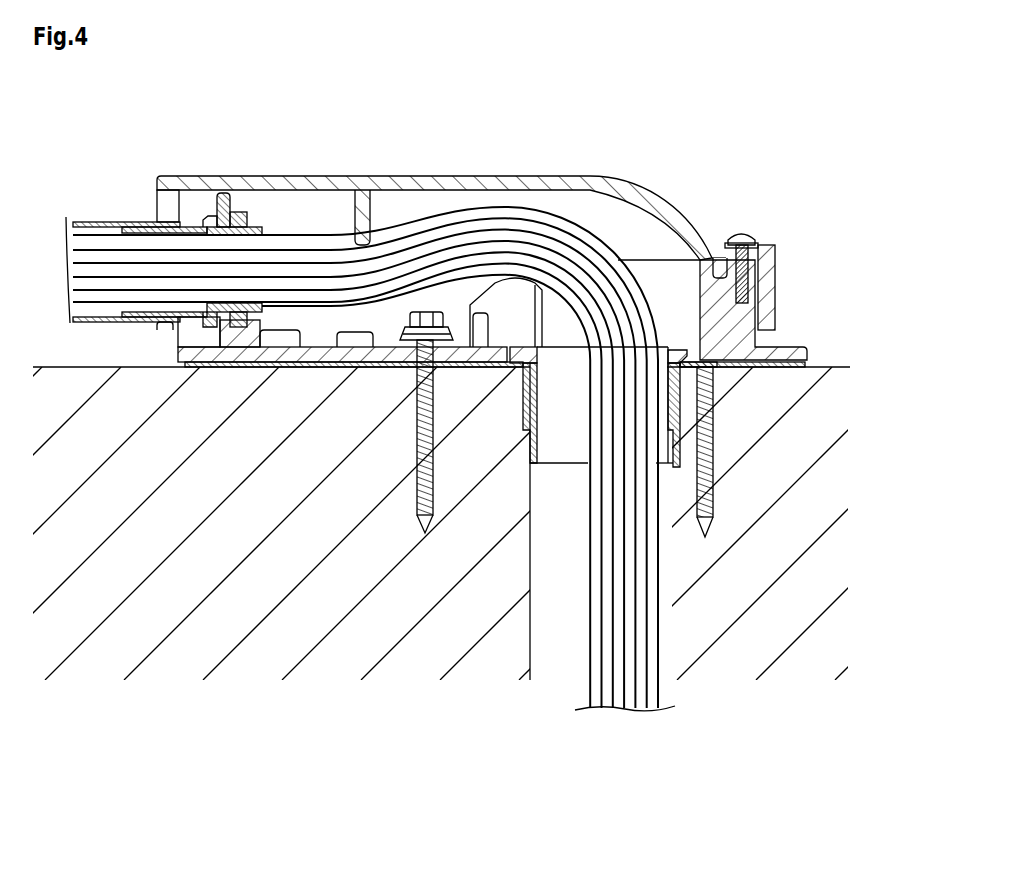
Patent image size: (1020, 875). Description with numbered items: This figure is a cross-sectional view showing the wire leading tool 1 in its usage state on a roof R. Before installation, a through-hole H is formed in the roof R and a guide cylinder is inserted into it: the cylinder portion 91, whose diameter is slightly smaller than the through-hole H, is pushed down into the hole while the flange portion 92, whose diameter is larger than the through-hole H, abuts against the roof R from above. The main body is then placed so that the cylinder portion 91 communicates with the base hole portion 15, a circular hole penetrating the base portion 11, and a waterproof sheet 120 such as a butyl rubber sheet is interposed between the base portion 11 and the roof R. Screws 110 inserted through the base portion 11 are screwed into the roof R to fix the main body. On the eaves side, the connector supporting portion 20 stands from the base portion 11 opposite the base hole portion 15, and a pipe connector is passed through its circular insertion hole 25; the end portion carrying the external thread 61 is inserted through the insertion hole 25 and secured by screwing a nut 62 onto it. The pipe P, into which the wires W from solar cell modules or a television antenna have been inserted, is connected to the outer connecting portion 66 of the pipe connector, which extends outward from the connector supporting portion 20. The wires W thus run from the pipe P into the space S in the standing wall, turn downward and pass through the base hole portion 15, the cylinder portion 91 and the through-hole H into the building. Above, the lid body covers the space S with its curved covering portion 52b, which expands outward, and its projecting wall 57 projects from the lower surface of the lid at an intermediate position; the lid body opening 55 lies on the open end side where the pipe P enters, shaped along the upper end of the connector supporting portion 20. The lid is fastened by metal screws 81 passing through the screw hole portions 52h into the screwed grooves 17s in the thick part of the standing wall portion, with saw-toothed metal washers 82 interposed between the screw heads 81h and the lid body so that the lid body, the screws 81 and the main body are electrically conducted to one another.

The wire leading tool 1 is at (513, 151).
The base portion 11 is at (178, 353).
The base hole portion 15 is at (519, 340).
The screwed grooves 17s is at (758, 298).
The connector supporting portion 20 is at (218, 214).
The insertion hole 25 is at (232, 228).
The curved covering portion 52b is at (483, 176).
The screw hole portions 52h is at (757, 262).
The lid body opening 55 is at (158, 193).
The projecting wall 57 is at (356, 192).
The external thread 61 is at (255, 195).
The nut 62 is at (239, 211).
The outer connecting portion 66 is at (186, 222).
The screws 81 is at (750, 277).
The screw heads 81h is at (742, 233).
The washers 82 is at (758, 243).
The cylinder portion 91 is at (678, 440).
The flange portion 92 is at (673, 347).
The screws 110 is at (714, 468).
The waterproof sheet 120 is at (182, 364).
The through-hole H is at (550, 620).
The pipe P is at (103, 220).
The roof R is at (40, 365).
The space in the standing wall S is at (391, 212).
The wires W is at (470, 283).